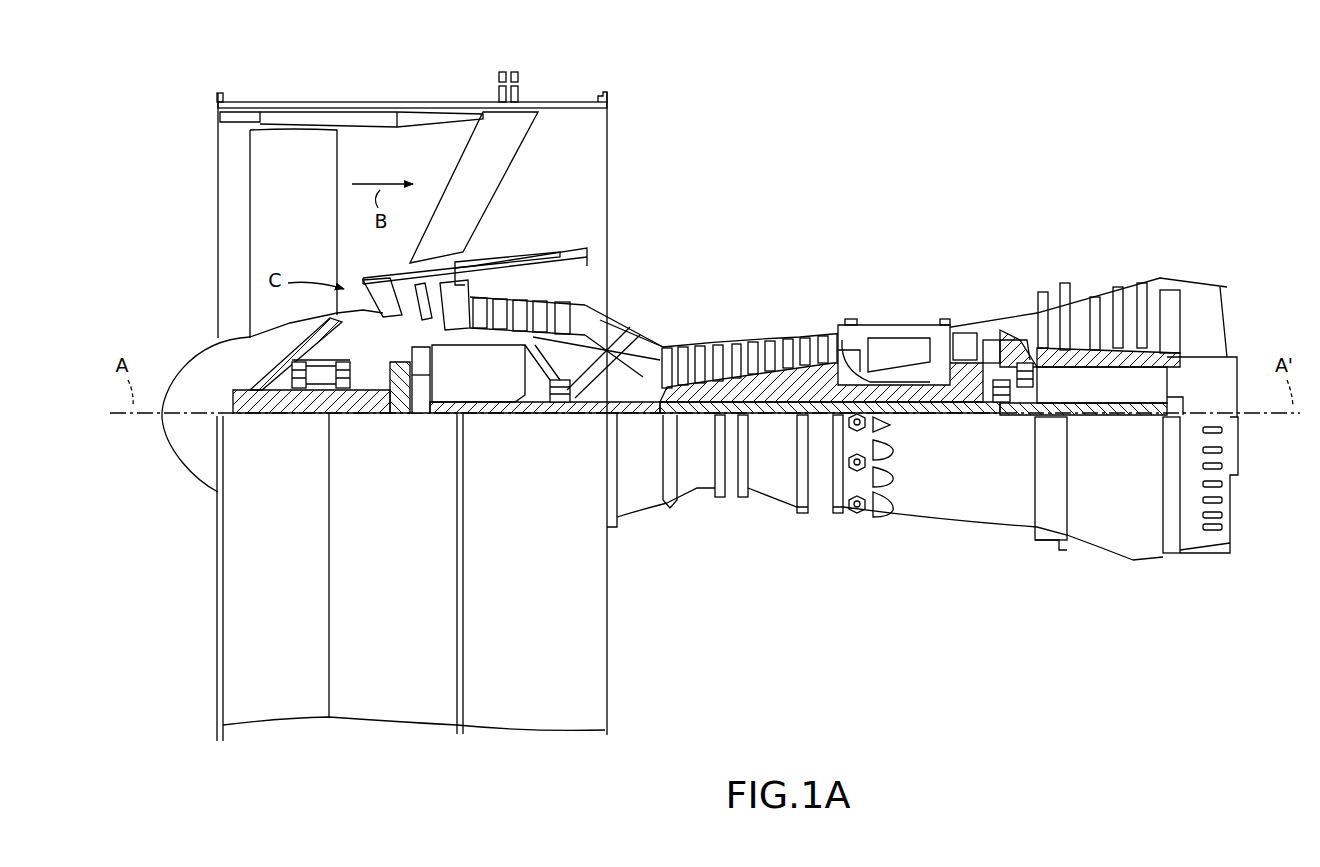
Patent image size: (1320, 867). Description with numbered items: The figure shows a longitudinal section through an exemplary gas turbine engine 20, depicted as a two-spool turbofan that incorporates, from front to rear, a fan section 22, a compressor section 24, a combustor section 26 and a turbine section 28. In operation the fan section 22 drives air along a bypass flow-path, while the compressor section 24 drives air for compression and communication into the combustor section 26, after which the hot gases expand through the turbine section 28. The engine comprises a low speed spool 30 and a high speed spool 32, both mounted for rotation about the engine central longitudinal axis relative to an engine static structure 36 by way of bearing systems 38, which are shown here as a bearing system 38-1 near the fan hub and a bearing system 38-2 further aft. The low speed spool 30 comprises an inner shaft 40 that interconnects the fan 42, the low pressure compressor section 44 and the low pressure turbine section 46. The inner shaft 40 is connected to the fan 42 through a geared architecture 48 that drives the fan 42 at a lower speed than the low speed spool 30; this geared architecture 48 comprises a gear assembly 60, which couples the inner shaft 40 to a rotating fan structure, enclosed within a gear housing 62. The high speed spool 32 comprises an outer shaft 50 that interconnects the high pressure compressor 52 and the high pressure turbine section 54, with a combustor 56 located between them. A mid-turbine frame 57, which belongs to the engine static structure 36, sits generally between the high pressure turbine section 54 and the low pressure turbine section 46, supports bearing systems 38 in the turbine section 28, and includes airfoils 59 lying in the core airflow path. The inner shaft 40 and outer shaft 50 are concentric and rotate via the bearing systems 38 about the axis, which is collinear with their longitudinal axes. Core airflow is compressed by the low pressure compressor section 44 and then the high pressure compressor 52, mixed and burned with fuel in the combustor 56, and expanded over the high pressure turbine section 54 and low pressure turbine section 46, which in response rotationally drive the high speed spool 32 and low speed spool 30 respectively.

The gas turbine engine 20 is at (954, 132).
The fan section 22 is at (455, 80).
The compressor section 24 is at (468, 214).
The combustor section 26 is at (955, 214).
The turbine section 28 is at (1170, 214).
The low speed spool 30 is at (775, 452).
The high speed spool 32 is at (818, 385).
The engine static structure 36 is at (206, 724).
The bearing system 38 is at (1008, 415).
The bearing system 38-1 is at (305, 396).
The bearing system 38-2 is at (560, 410).
The inner shaft 40 is at (630, 415).
The fan 42 is at (299, 228).
The low pressure compressor section 44 is at (545, 312).
The low pressure turbine section 46 is at (1102, 303).
The geared architecture 48 is at (427, 434).
The outer shaft 50 is at (896, 403).
The high pressure compressor 52 is at (782, 350).
The high pressure turbine section 54 is at (964, 333).
The combustor 56 is at (890, 350).
The mid-turbine frame 57 is at (1012, 335).
The airfoils 59 is at (1032, 318).
The gear assembly 60 is at (428, 398).
The gear housing 62 is at (425, 356).